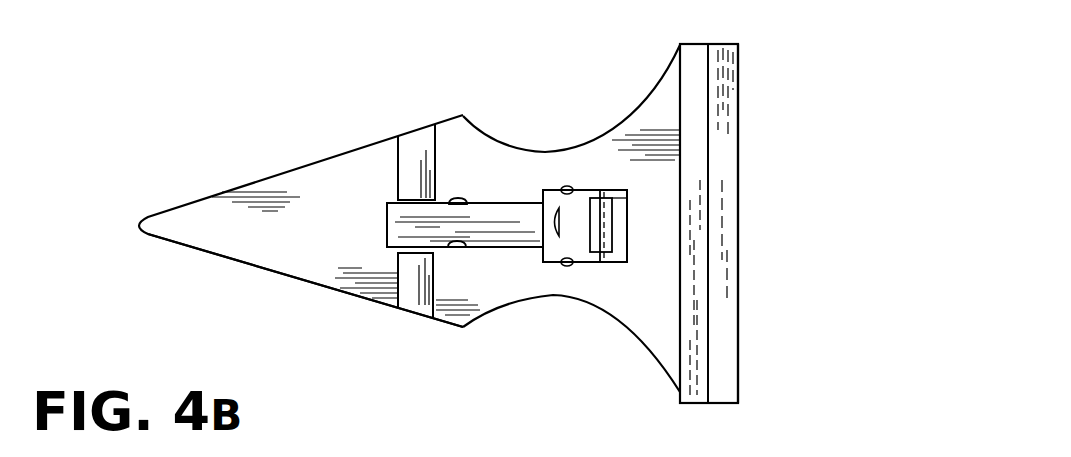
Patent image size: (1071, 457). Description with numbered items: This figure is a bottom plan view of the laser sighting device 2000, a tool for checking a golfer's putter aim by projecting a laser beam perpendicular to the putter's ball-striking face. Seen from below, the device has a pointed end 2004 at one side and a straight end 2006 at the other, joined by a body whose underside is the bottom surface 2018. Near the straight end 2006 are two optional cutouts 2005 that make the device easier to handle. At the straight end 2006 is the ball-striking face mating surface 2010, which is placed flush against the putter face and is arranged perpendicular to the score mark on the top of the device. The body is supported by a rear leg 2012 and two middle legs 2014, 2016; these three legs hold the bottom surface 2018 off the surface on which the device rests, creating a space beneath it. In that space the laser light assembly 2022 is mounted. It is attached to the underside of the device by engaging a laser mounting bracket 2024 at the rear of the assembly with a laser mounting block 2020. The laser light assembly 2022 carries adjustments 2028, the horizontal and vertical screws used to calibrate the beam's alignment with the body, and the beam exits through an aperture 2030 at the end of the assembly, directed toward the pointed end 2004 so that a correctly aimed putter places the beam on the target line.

The laser sighting device 2000 is at (752, 68).
The pointed end 2004 is at (162, 210).
The bottom surface 2018 is at (223, 227).
The middle leg 2014 is at (417, 142).
The middle leg 2016 is at (407, 307).
The aperture 2030 is at (387, 227).
The laser light assembly 2022 is at (495, 243).
The adjustments 2028 is at (462, 199).
The laser mounting block 2020 is at (587, 230).
The laser mounting bracket 2024 is at (590, 265).
The cutouts 2005 is at (557, 150).
The straight end 2006 is at (663, 332).
The rear leg 2012 is at (690, 53).
The ball-striking face mating surface 2010 is at (740, 170).